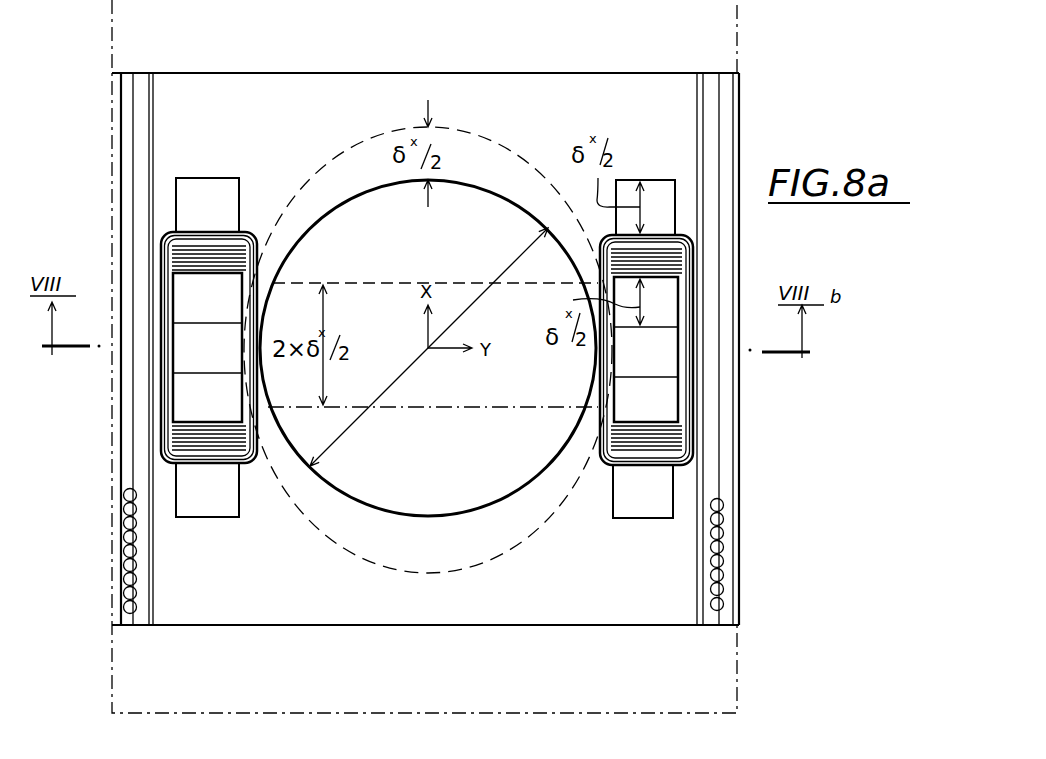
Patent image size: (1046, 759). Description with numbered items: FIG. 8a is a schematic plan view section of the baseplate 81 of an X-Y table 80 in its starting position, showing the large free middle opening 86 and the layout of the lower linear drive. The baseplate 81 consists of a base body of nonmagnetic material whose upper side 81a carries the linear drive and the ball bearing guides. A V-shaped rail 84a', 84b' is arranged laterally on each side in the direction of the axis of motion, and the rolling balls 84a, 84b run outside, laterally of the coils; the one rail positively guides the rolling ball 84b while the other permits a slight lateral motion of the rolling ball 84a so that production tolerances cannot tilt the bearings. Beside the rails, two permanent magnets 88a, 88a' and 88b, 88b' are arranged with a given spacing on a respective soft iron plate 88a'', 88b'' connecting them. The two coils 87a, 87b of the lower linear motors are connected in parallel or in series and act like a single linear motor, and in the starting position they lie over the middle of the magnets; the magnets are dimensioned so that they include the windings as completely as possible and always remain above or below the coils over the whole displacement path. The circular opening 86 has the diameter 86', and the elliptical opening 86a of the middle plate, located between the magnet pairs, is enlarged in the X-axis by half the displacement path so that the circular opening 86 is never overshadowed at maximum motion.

The table 80 is at (755, 79).
The baseplate 81 is at (557, 610).
The upper side of the baseplate 81a is at (668, 627).
The rolling ball 84a is at (97, 551).
The V-shaped rail 84a' is at (98, 349).
The rolling ball 84b is at (757, 555).
The V-shaped rail 84b' is at (761, 349).
The circular middle opening 86 is at (428, 348).
The diameter of the circular middle opening 86' is at (429, 345).
The elliptical opening 86a is at (423, 550).
The coil 87a is at (180, 446).
The coil 87b is at (683, 403).
The permanent magnet 88a is at (214, 513).
The permanent magnet 88a' is at (203, 183).
The soft iron plate 88a'' is at (151, 347).
The permanent magnet 88b is at (643, 519).
The permanent magnet 88b' is at (653, 180).
The soft iron plate 88b'' is at (722, 349).